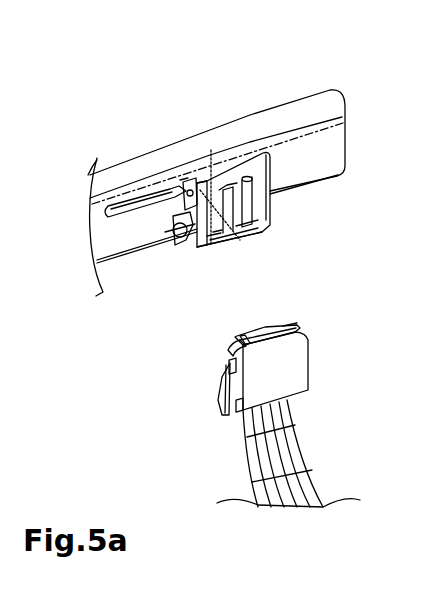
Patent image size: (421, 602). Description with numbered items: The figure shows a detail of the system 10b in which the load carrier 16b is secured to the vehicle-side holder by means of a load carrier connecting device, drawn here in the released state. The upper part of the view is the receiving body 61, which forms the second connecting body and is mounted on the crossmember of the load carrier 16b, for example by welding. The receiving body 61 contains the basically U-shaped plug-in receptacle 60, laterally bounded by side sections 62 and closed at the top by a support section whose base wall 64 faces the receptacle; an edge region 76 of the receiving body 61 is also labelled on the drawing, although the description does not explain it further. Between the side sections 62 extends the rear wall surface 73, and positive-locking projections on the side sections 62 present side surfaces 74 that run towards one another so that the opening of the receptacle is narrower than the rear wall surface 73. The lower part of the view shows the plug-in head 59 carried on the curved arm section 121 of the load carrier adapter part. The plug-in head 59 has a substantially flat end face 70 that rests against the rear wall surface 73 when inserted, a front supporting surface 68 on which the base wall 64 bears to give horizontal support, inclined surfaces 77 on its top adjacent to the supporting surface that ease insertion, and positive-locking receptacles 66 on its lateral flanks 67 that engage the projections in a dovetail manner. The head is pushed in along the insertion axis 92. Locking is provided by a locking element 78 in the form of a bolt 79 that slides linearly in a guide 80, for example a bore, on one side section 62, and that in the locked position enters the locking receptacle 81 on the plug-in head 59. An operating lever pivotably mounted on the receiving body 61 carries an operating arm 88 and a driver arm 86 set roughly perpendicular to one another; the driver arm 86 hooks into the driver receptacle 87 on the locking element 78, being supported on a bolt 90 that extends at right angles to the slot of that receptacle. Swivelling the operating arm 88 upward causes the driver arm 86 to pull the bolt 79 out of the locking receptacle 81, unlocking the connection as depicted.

The system 10b is at (125, 118).
The load carrier 16b is at (265, 127).
The receiving body 61 is at (240, 153).
The locking element 78 is at (183, 178).
The guide 80 is at (215, 186).
The operating arm 88 is at (132, 202).
The driver receptacle 87 is at (163, 233).
The driver arm 86 is at (180, 250).
The bolt 90 is at (181, 243).
The base wall 64 is at (258, 188).
The housing edge 76 is at (262, 187).
The side section 62 is at (258, 197).
The side surface 74 is at (243, 207).
The plug-in receptacle 60 is at (247, 232).
The rear wall surface 73 is at (235, 205).
The bolt 79 is at (214, 238).
The insertion axis 92 is at (218, 235).
The plug-in head 59 is at (293, 375).
The front supporting surface 68 is at (260, 332).
The positive-locking receptacle 66 is at (287, 325).
The end face 70 is at (243, 347).
The inclined surface 77 is at (233, 343).
The locking receptacle 81 is at (226, 374).
The lateral flank 67 is at (222, 382).
The arm section 121 is at (260, 480).